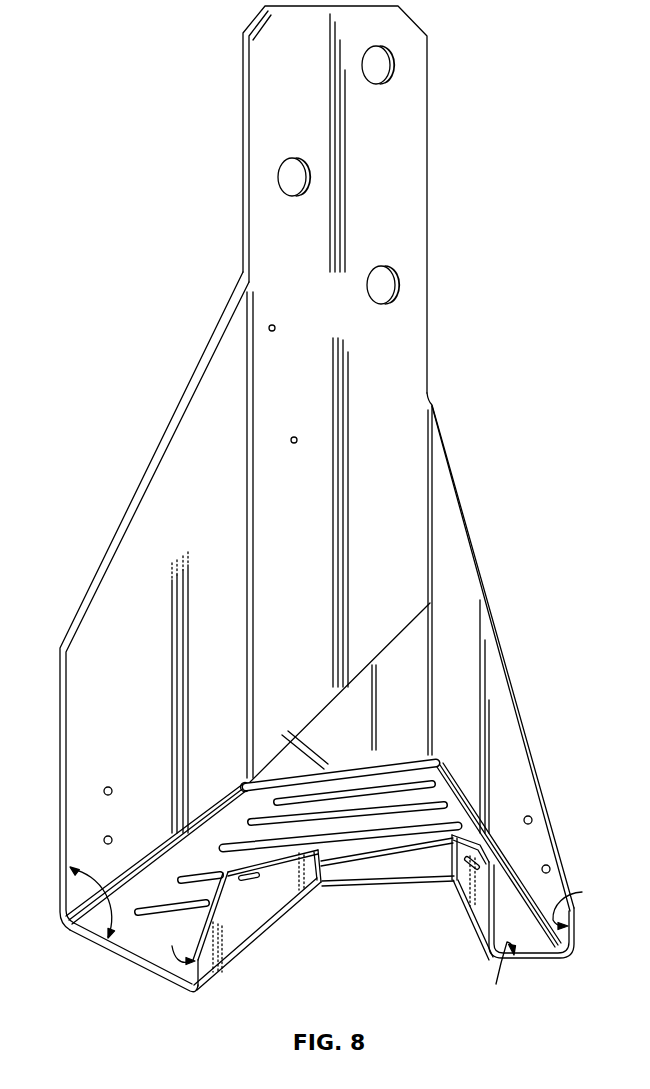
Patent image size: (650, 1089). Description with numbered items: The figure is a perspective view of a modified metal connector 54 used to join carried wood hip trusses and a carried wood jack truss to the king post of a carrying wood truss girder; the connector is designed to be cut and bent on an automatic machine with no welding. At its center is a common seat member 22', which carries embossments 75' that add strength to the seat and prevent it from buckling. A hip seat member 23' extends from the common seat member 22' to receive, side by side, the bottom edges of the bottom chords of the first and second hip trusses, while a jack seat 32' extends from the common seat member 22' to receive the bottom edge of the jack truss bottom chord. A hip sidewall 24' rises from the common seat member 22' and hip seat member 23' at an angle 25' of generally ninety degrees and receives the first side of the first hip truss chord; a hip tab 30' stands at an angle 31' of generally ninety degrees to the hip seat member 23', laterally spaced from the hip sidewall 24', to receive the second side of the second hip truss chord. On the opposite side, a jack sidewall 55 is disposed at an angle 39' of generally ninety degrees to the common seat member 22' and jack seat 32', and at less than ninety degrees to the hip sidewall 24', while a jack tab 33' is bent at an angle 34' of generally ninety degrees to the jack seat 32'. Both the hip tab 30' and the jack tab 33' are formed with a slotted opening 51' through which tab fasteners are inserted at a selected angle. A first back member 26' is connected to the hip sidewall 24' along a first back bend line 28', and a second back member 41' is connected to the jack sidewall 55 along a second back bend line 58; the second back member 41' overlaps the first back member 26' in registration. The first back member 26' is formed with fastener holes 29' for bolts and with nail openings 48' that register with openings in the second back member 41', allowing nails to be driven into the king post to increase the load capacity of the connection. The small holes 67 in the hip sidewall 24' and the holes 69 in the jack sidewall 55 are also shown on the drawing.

The first back member 26' is at (337, 380).
The first back bend line 28' is at (282, 535).
The fastener holes 29' is at (339, 175).
The metal connector 54 is at (432, 132).
The nail openings 48' is at (291, 361).
The hip sidewall 24' is at (127, 601).
The nail openings 67 is at (112, 838).
The hip seat member 23' is at (129, 961).
The angle 25' is at (156, 861).
The second back bend line 58 is at (433, 607).
The common seat member 22' is at (339, 766).
The embossments 75' is at (306, 837).
The second back member 41' is at (403, 741).
The hip tab 30' is at (257, 920).
The angle 31' is at (175, 941).
The slotted opening 51' is at (346, 893).
The jack sidewall 55 is at (517, 700).
The nail openings 69 is at (547, 865).
The jack seat 32' is at (531, 935).
The jack tab 33' is at (464, 901).
The angle 34' is at (488, 975).
The angle 39' is at (526, 855).